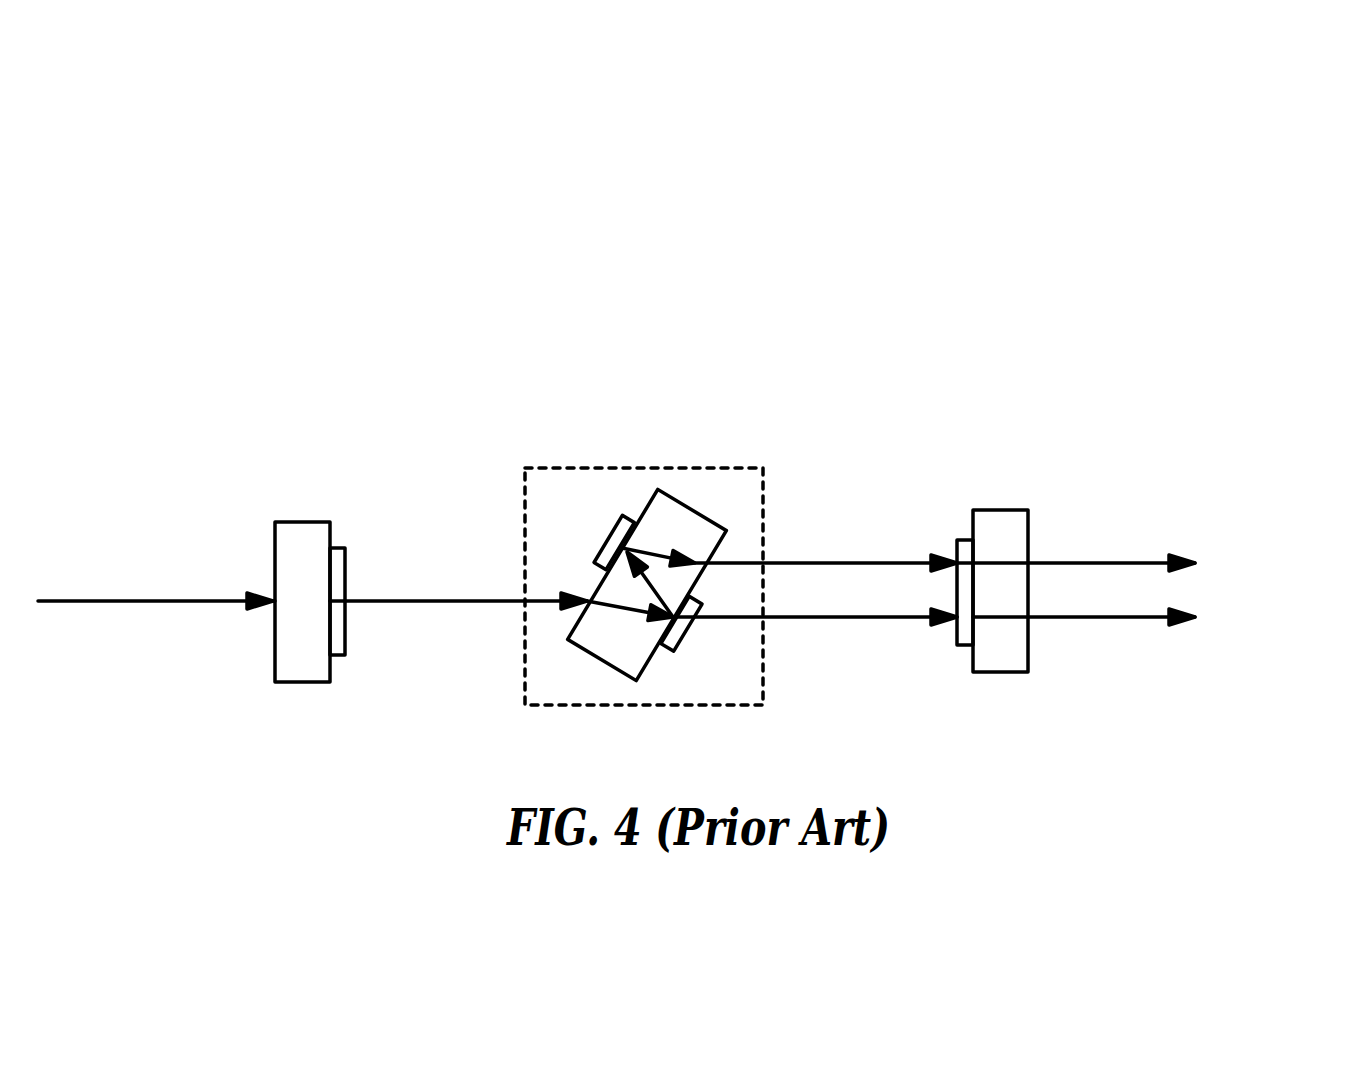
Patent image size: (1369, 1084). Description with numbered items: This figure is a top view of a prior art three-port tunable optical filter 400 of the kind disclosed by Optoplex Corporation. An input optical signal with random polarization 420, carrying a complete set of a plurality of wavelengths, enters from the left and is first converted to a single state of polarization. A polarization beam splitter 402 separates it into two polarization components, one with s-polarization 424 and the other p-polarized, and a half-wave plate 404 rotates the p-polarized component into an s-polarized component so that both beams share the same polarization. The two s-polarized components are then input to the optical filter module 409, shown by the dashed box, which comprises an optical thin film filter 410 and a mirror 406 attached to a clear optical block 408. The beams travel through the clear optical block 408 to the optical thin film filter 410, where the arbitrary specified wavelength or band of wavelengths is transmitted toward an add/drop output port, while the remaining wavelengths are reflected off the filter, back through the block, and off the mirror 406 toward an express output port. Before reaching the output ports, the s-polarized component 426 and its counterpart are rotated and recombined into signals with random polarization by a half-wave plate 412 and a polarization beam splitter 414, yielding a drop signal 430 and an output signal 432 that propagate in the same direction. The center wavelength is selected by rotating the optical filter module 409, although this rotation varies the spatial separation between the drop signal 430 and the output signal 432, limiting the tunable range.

The three-port tunable optical filter 400 is at (969, 251).
The polarization beam splitter 402 is at (293, 521).
The half-wave plate 404 is at (332, 547).
The mirror 406 is at (617, 543).
The clear optical block 408 is at (657, 488).
The optical filter module 409 is at (525, 660).
The optical thin film filter 410 is at (693, 598).
The half-wave plate 412 is at (957, 538).
The polarization beam splitter 414 is at (1000, 510).
The input optical signal with random polarization 420 is at (233, 600).
The s-polarization component 424 is at (483, 600).
The s-polarized component 426 is at (800, 620).
The drop signal 430 is at (823, 563).
The output signal 432 is at (1073, 622).